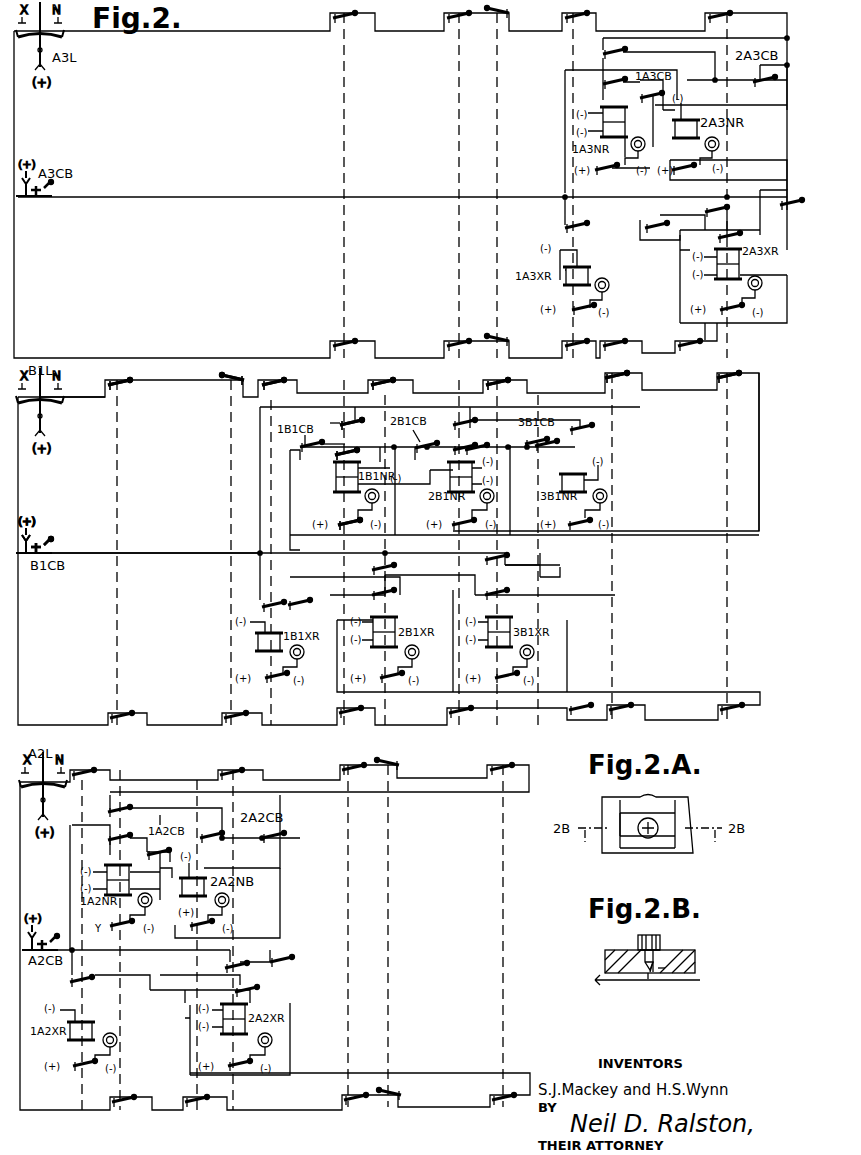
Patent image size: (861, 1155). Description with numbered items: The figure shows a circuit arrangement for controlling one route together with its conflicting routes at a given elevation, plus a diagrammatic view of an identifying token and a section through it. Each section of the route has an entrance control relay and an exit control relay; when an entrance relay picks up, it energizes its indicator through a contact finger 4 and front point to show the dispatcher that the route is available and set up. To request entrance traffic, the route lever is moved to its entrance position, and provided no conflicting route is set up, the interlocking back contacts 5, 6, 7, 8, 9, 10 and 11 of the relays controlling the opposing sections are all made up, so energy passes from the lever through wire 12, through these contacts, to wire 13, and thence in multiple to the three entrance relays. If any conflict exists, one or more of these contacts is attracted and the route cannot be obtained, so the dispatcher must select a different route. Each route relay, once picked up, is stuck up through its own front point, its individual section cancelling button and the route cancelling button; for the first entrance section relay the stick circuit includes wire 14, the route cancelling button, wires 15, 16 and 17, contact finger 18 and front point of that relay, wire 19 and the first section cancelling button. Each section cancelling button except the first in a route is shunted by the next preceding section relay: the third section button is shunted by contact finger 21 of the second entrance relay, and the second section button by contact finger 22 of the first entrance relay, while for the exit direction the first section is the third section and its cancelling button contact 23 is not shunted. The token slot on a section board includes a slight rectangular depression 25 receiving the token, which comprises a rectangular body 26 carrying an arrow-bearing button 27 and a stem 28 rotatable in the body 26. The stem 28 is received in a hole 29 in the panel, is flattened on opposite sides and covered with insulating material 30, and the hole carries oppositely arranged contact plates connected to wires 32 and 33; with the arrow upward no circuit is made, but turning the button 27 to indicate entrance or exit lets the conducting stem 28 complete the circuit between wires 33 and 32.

In FIG. 2, the contact finger 4 is at (340, 517).
In FIG. 2, the interlocking back contact 5 is at (122, 382).
In FIG. 2, the interlocking back contact 6 is at (238, 378).
In FIG. 2, the interlocking back contact 7 is at (272, 374).
In FIG. 2, the interlocking back contact 8 is at (376, 382).
In FIG. 2, the interlocking back contact 9 is at (492, 382).
In FIG. 2, the interlocking back contact 10 is at (610, 376).
In FIG. 2, the interlocking back contact 11 is at (722, 376).
In FIG. 2, the wire 12 is at (72, 406).
In FIG. 2, the wire 13 is at (759, 438).
In FIG. 2, the wire 14 is at (34, 533).
In FIG. 2, the wire 15 is at (85, 553).
In FIG. 2, the wire 16 is at (260, 483).
In FIG. 2, the wire 17 is at (356, 416).
In FIG. 2, the contact finger 18 is at (335, 442).
In FIG. 2, the wire 19 is at (330, 423).
In FIG. 2, the contact finger 21 is at (455, 456).
In FIG. 2, the contact finger 22 is at (337, 452).
In FIG. 2, the cancelling button contact 23 is at (533, 572).
In FIG. 2A, the depression 25 is at (662, 860).
In FIG. 2B, the depression 25 is at (690, 952).
In FIG. 2A, the body 26 is at (675, 836).
In FIG. 2B, the body 26 is at (655, 953).
In FIG. 2A, the button 27 is at (655, 825).
In FIG. 2B, the button 27 is at (638, 938).
In FIG. 2B, the stem 28 is at (648, 975).
In FIG. 2B, the hole 29 is at (656, 973).
In FIG. 2B, the insulating material 30 is at (650, 980).
In FIG. 2B, the wire 32 is at (660, 972).
In FIG. 2B, the wire 33 is at (612, 983).